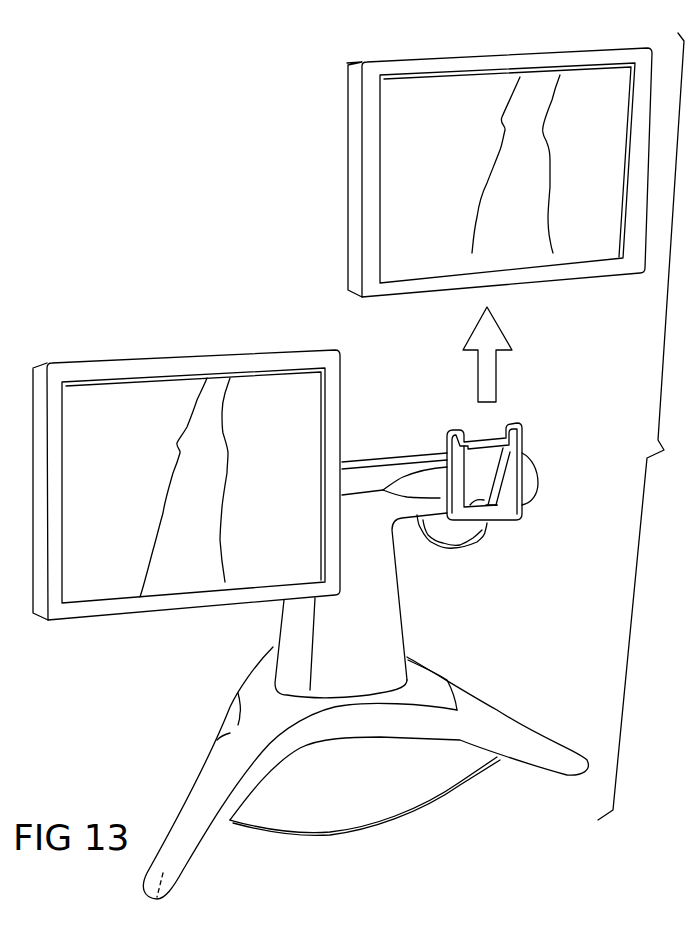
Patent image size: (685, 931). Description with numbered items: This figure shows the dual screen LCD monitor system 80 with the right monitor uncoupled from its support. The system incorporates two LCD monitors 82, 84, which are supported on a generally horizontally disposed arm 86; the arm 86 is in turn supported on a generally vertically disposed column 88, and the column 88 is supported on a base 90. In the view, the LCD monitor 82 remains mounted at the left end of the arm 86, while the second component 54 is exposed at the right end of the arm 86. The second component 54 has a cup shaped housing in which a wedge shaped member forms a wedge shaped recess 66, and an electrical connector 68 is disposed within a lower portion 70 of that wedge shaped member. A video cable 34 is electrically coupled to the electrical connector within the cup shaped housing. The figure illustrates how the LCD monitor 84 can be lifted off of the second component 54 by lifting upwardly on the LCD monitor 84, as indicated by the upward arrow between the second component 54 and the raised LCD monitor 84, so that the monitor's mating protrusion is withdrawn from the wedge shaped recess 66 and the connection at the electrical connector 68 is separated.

The video cable 34 is at (423, 540).
The second component 54 is at (520, 428).
The wedge shaped recess 66 is at (478, 463).
The electrical connector 68 is at (492, 503).
The lower portion 70 is at (505, 502).
The dual screen LCD monitor system 80 is at (262, 318).
The LCD monitor 82 is at (157, 365).
The LCD monitor 84 is at (455, 67).
The arm 86 is at (365, 476).
The column 88 is at (325, 636).
The base 90 is at (432, 777).